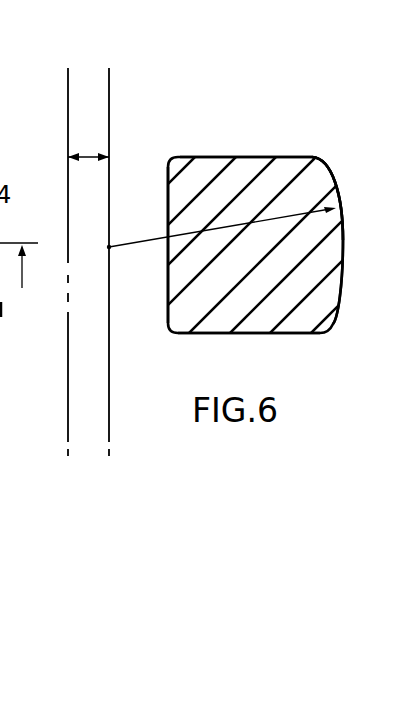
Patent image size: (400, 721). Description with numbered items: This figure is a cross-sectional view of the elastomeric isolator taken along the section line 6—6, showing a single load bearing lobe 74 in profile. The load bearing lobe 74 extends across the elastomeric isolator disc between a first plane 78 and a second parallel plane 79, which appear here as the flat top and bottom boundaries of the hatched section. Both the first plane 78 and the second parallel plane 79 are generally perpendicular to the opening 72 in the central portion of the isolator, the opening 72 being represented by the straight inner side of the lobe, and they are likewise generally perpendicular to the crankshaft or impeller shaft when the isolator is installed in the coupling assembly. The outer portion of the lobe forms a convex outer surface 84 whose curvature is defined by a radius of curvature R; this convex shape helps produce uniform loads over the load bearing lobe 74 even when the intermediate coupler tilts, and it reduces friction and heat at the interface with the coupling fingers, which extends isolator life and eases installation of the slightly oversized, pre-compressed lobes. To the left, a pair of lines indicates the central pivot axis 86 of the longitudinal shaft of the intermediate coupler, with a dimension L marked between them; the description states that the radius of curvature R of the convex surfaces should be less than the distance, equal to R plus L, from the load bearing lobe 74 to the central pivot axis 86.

The load bearing lobe 74 is at (228, 146).
The first plane 78 is at (258, 155).
The opening 72 is at (167, 287).
The second parallel plane 79 is at (240, 334).
The convex outer surface 84 is at (342, 248).
The central pivot axis 86 is at (70, 93).
The radius of curvature R is at (290, 213).
The distance L is at (92, 153).
The section line 6— 6 is at (19, 267).